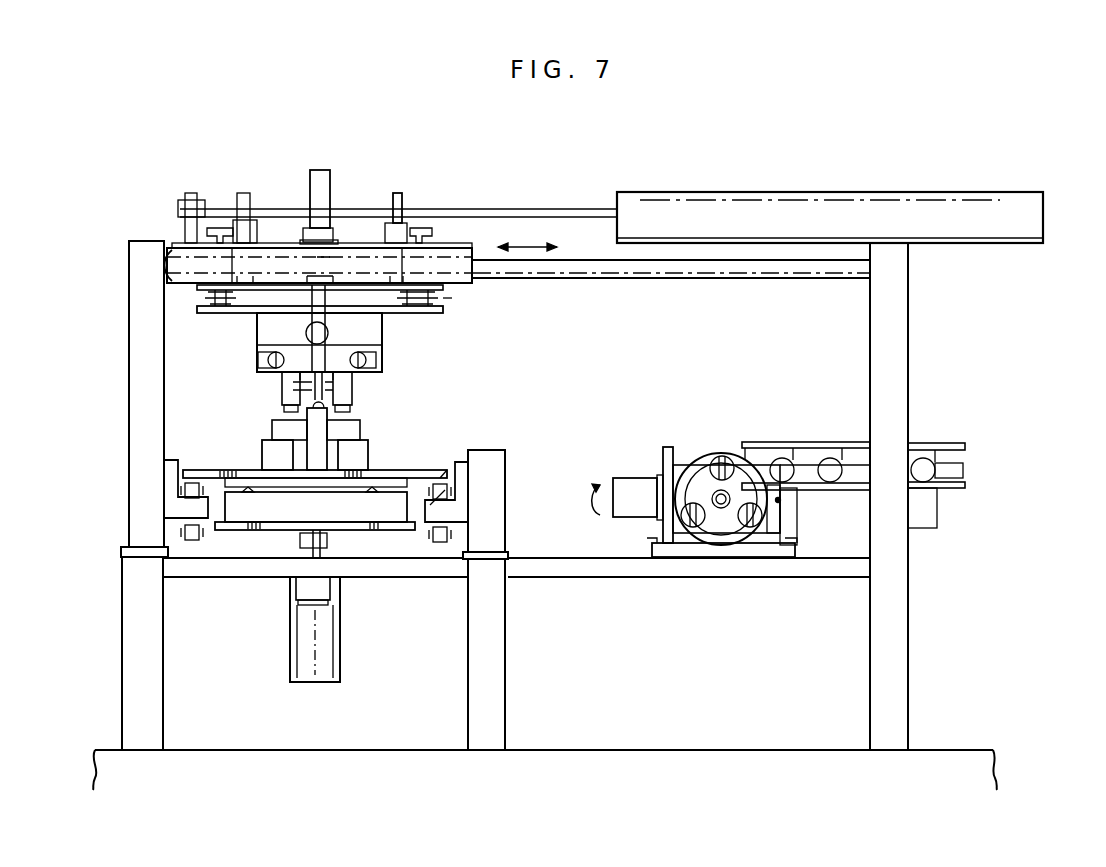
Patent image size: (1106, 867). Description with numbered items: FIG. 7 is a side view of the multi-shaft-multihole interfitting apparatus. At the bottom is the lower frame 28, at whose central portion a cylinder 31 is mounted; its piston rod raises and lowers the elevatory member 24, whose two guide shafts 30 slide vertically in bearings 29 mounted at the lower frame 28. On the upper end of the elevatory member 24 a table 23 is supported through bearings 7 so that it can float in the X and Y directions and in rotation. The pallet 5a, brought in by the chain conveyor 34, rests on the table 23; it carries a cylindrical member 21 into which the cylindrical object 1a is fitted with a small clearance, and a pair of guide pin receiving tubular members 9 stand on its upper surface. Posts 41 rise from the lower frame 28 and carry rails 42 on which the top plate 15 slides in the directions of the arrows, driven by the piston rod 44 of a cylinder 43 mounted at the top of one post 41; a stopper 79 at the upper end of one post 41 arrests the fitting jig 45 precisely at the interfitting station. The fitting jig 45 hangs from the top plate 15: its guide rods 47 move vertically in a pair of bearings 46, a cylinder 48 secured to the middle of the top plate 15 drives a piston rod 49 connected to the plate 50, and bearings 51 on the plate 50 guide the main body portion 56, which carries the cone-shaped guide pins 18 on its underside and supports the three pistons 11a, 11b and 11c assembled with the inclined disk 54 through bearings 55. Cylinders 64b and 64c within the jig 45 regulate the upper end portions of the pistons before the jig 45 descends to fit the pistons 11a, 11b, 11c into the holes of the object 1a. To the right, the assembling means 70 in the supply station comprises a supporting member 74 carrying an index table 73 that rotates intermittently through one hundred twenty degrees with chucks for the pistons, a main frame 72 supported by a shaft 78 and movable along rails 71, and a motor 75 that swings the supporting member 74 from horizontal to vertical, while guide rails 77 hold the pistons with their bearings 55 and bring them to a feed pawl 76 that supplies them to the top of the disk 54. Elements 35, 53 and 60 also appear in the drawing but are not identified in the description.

The cylindrical object 1a is at (352, 428).
The pallet 5a is at (437, 470).
The bearings 7 is at (380, 480).
The guide pin receiving tubular members 9 is at (312, 428).
The piston 11a is at (720, 457).
The piston 11b is at (283, 405).
The piston 11c is at (352, 405).
The top plate 15 is at (460, 256).
The guide pins 18 is at (294, 385).
The cylindrical member 21 is at (366, 456).
The table 23 is at (236, 480).
The elevatory member 24 is at (272, 530).
The lower frame 28 is at (432, 567).
The bearings 29 is at (333, 592).
The guide shafts 30 is at (322, 548).
The cylinder 31 is at (334, 636).
The chain conveyor 34 is at (199, 533).
The bolt 35 is at (433, 512).
The posts 41 is at (129, 352).
The rails 42 is at (605, 268).
The cylinder 43 is at (830, 204).
The piston rod 44 is at (222, 208).
The fitting jig 45 is at (452, 300).
The bearings 46 is at (418, 230).
The guide rods 47 is at (398, 195).
The cylinder 48 is at (330, 186).
The piston rod 49 is at (325, 258).
The plate 50 is at (393, 298).
The bearings 51 is at (199, 286).
The spring 53 is at (208, 298).
The inclined disk 54 is at (740, 480).
The bearings 55 is at (345, 390).
The main body portion 56 is at (263, 330).
The ball joint 60 is at (330, 333).
The cylinder 64b is at (258, 360).
The cylinder 64c is at (378, 360).
The assembling means 70 is at (656, 444).
The rails 71 is at (796, 548).
The main frame 72 is at (668, 447).
The index table 73 is at (738, 458).
The supporting member 74 is at (684, 466).
The motor 75 is at (630, 478).
The feed pawl 76 is at (944, 443).
The guide rails 77 is at (963, 471).
The shaft 78 is at (782, 500).
The stopper 79 is at (172, 250).